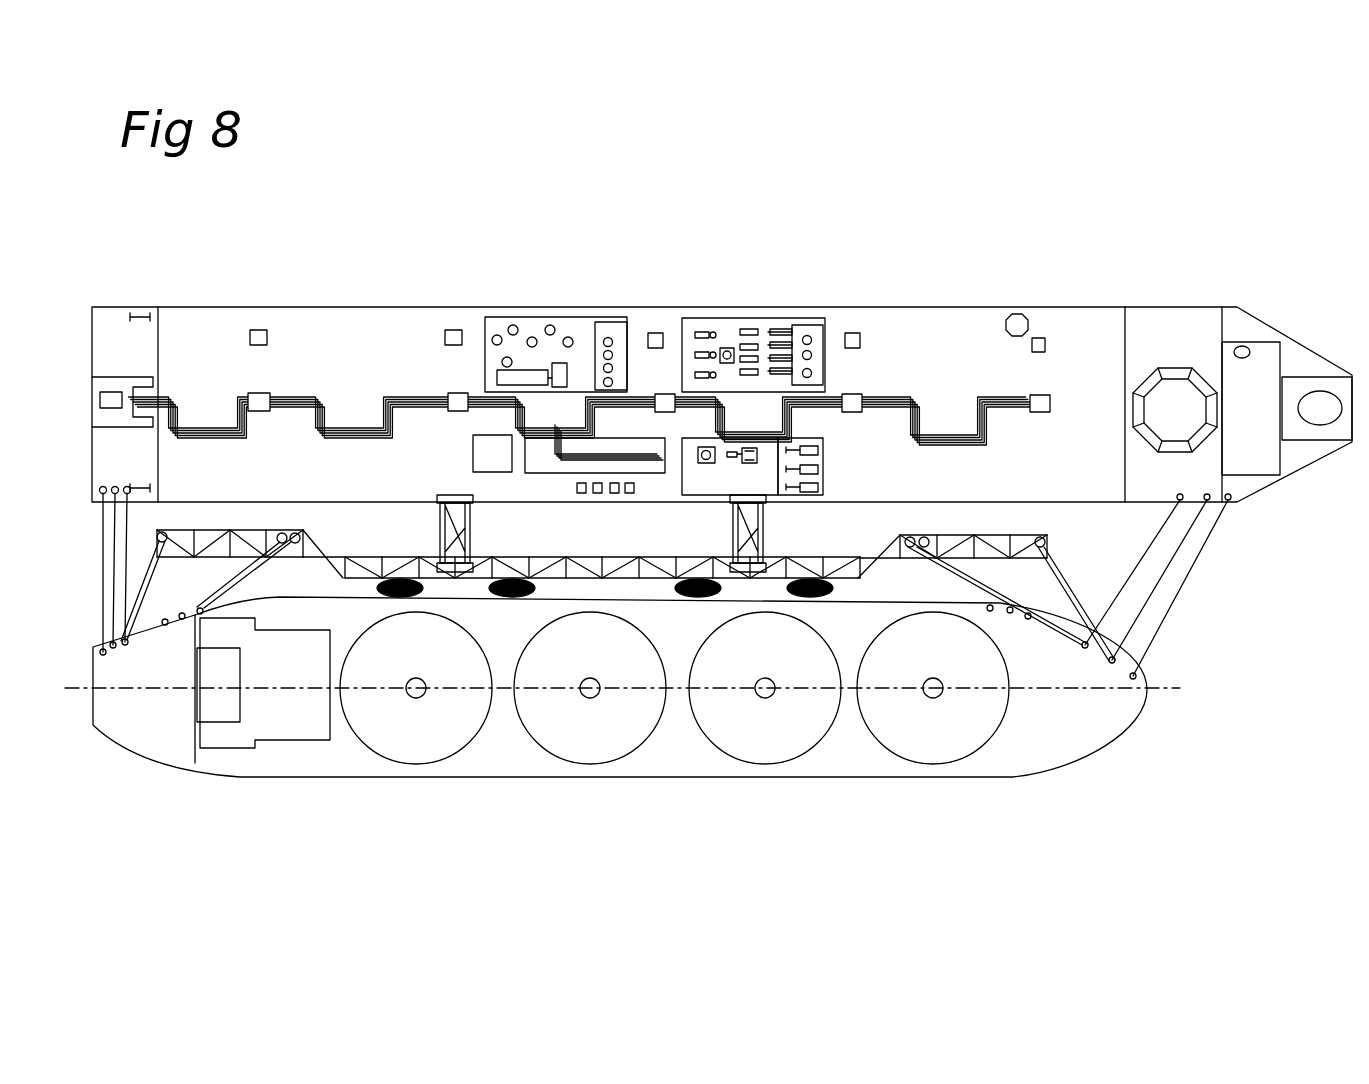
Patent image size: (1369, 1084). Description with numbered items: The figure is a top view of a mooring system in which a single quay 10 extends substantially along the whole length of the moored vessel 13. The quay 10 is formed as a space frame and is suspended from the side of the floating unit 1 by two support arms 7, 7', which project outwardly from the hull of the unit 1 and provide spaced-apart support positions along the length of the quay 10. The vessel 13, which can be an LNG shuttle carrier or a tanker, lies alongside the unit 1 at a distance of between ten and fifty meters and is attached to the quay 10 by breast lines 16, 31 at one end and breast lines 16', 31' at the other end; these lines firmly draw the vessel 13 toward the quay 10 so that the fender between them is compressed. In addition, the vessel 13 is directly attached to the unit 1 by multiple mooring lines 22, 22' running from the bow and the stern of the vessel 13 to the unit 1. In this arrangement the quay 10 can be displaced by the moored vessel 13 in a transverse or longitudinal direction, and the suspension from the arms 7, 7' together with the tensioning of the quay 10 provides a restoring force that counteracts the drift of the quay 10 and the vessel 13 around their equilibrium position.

The unit 1 is at (1082, 345).
The support arm 7 is at (419, 533).
The support arm 7' is at (724, 533).
The quay 10 is at (635, 557).
The vessel 13 is at (343, 762).
The mooring cable 16 is at (158, 591).
The mooring cable 16' is at (1092, 598).
The mooring line 22 is at (92, 574).
The mooring line 22' is at (1169, 586).
The breast line 31 is at (257, 575).
The breast line 31' is at (989, 596).